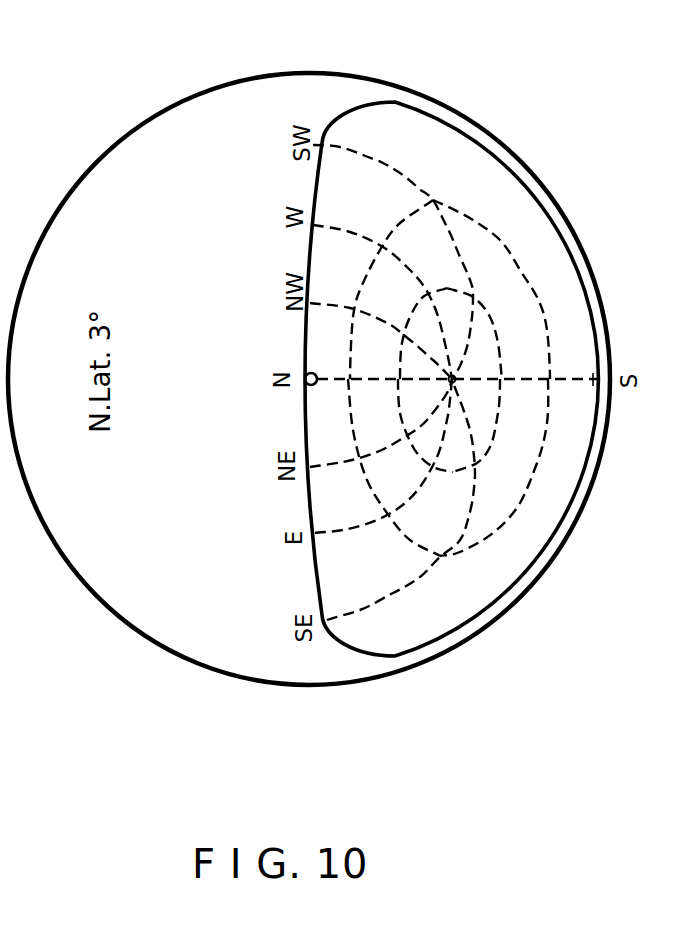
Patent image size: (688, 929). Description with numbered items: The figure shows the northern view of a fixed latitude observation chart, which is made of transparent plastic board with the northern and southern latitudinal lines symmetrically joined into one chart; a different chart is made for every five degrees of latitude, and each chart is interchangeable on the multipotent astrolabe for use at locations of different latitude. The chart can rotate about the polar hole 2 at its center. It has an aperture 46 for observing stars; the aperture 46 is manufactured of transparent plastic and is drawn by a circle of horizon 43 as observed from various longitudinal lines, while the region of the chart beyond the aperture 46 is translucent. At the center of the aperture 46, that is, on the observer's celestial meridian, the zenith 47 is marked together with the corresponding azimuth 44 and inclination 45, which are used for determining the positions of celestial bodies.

The polar hole 2 is at (307, 374).
The circle of horizon 43 is at (433, 113).
The azimuth 44 is at (374, 154).
The inclination 45 is at (472, 297).
The aperture 46 is at (486, 172).
The zenith 47 is at (455, 377).